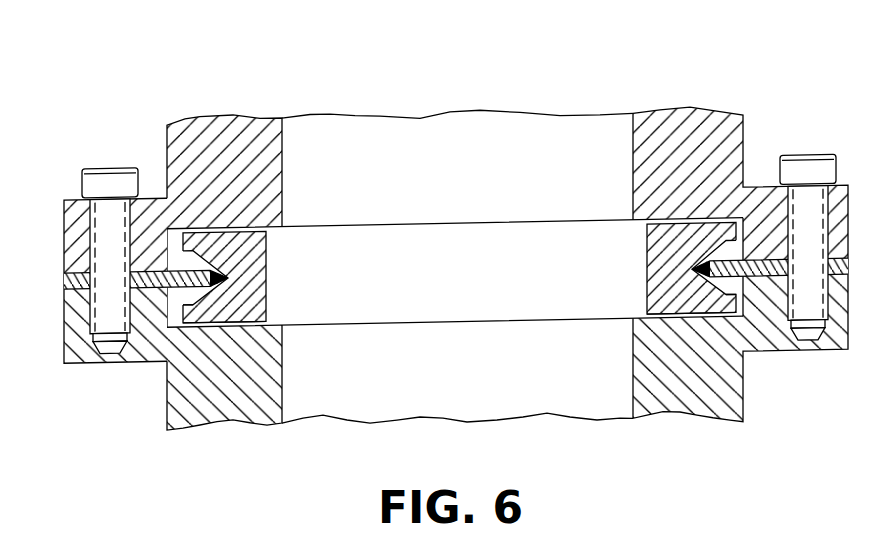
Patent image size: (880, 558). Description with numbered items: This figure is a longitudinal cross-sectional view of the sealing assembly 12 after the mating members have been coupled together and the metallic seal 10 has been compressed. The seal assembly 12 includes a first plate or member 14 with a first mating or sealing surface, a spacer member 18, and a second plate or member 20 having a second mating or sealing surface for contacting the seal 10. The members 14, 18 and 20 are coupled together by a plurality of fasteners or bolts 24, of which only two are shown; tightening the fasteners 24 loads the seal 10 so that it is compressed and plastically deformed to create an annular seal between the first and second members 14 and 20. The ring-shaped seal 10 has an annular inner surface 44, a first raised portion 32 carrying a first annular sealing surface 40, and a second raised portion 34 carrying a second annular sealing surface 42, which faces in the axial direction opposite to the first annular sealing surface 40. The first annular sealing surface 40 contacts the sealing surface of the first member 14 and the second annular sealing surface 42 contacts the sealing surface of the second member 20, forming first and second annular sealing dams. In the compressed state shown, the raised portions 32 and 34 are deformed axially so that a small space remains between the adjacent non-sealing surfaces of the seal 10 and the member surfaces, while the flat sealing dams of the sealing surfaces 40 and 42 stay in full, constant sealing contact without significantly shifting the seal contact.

The metallic seal 10 is at (545, 222).
The sealing assembly 12 is at (688, 77).
The first plate or member 14 is at (151, 362).
The spacer member 18 is at (60, 273).
The second plate or member 20 is at (218, 112).
The fasteners or bolts 24 is at (113, 162).
The first raised portion 32 is at (261, 327).
The second raised portion 34 is at (258, 222).
The first annular sealing surface 40 is at (656, 328).
The second annular sealing surface 42 is at (656, 226).
The annular inner surface 44 is at (266, 284).